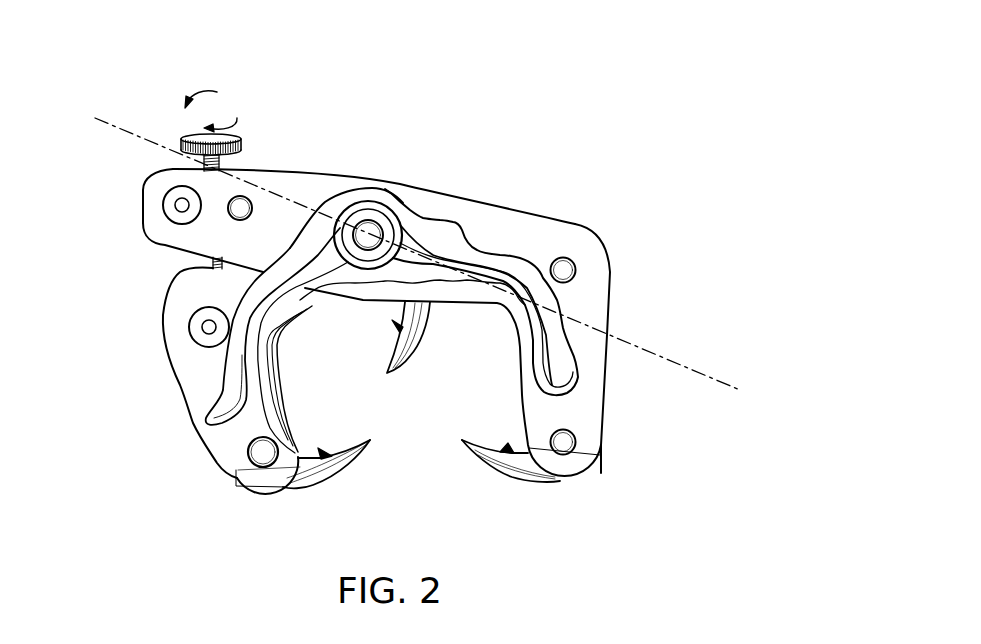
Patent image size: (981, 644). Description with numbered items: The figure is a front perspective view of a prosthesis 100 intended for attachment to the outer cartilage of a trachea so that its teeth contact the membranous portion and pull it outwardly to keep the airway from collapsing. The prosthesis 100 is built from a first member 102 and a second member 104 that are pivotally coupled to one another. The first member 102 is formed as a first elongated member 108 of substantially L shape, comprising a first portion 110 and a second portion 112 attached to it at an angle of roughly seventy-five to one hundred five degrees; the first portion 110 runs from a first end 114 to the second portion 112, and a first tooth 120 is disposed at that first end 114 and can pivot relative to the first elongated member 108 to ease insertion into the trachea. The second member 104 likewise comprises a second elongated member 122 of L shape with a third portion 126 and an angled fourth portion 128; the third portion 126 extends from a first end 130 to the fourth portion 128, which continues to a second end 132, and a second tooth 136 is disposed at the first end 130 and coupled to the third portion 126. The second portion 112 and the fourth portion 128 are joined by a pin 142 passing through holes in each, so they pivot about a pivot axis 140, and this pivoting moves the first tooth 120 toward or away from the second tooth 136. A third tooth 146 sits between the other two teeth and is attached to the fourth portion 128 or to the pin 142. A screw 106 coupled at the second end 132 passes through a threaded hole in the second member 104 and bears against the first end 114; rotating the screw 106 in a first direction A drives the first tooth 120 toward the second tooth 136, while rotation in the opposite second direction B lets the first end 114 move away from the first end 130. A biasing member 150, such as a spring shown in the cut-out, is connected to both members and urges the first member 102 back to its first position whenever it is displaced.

The prosthesis 100 is at (638, 63).
The first member 102 is at (183, 402).
The second member 104 is at (603, 300).
The screw 106 is at (245, 131).
The first elongated member 108 is at (190, 426).
The first portion 110 is at (172, 367).
The second portion 112 is at (212, 264).
The first end 114 is at (213, 463).
The first tooth 120 is at (310, 475).
The second elongated member 122 is at (614, 270).
The third portion 126 is at (598, 382).
The fourth portion 128 is at (488, 222).
The first end 130 is at (588, 430).
The second end 132 is at (162, 185).
The second tooth 136 is at (508, 470).
The pivot axis 140 is at (748, 395).
The pin 142 is at (362, 227).
The third tooth 146 is at (416, 344).
The biasing member 150 is at (432, 258).
The first direction A is at (236, 116).
The second direction B is at (184, 96).